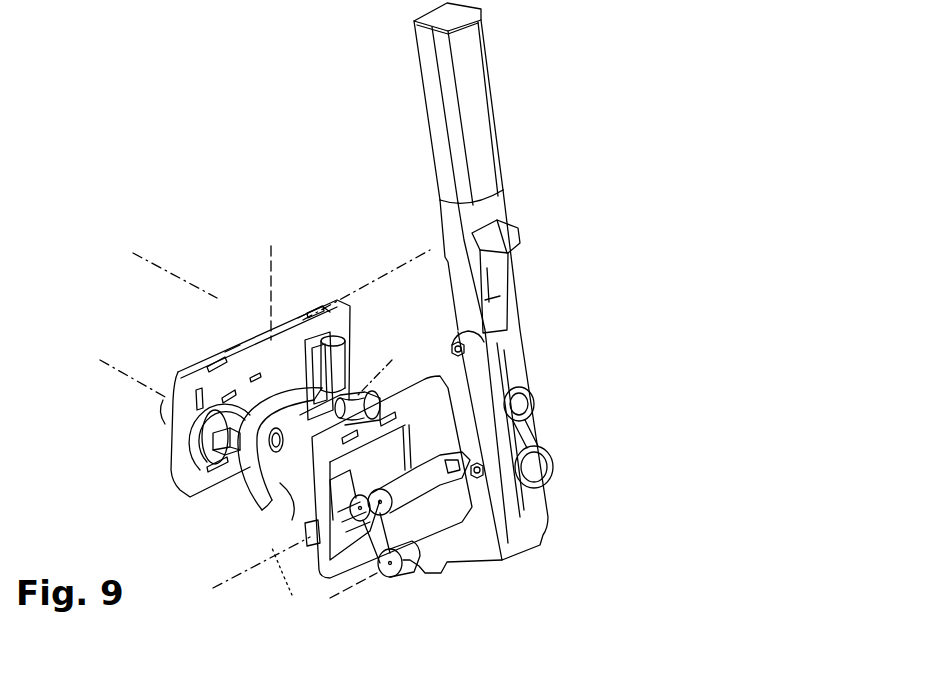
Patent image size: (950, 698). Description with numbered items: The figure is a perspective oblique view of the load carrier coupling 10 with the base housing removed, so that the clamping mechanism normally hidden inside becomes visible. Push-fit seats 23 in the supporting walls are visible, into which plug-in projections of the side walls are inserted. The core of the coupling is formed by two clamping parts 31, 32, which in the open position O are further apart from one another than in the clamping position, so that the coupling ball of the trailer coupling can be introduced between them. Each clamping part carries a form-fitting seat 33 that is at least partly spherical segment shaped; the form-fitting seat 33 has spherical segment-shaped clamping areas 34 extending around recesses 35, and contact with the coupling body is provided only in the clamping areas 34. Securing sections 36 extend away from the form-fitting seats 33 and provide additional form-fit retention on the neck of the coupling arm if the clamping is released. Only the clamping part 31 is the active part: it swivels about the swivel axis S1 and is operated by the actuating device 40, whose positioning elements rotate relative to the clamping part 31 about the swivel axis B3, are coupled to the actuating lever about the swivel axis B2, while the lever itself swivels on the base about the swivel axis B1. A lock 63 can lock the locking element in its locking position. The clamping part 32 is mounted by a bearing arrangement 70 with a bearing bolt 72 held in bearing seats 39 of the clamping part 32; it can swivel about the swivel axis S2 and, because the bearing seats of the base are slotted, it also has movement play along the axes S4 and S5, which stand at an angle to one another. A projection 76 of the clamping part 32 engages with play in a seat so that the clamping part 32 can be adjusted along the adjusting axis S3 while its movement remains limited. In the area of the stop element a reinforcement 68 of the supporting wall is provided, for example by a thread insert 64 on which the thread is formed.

The load carrier coupling 10 is at (767, 182).
The push-fit seats 23 is at (247, 350).
The clamping part 31 is at (313, 545).
The clamping part 32 is at (217, 440).
The form-fitting seat 33 is at (273, 427).
The clamping areas 34 is at (262, 452).
The recesses 35 is at (262, 448).
The securing sections 36 is at (285, 522).
The bearing seats 39 is at (258, 385).
The actuating device 40 is at (448, 560).
The lock 63 is at (524, 403).
The thread insert 64 is at (217, 430).
The reinforcement 68 is at (203, 447).
The bearing arrangement 70 is at (283, 340).
The bearing bolt 72 is at (232, 350).
The projection 76 is at (227, 450).
The open position O is at (550, 300).
The swivel axis S1 is at (387, 363).
The swivel axis S2 is at (270, 250).
The adjusting axis S3 is at (100, 360).
The axis S4 is at (157, 267).
The axis S5 is at (380, 277).
The swivel axis B1 is at (348, 592).
The swivel axis B2 is at (285, 587).
The swivel axis B3 is at (213, 592).